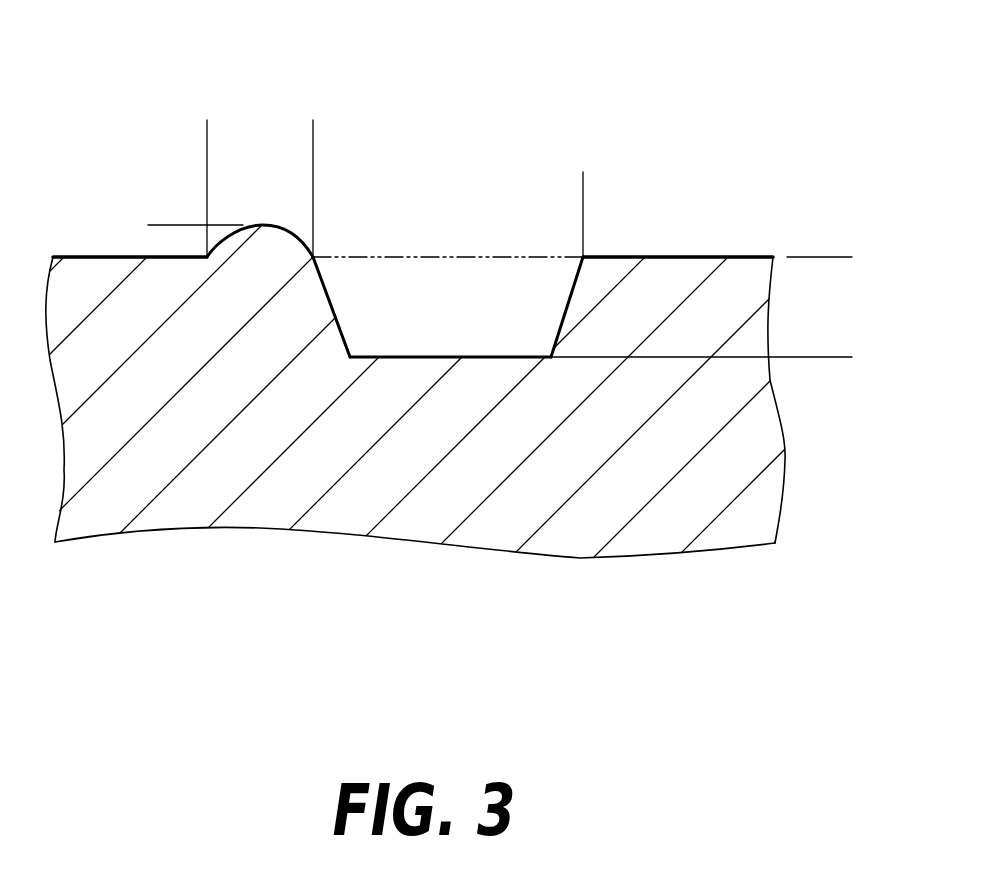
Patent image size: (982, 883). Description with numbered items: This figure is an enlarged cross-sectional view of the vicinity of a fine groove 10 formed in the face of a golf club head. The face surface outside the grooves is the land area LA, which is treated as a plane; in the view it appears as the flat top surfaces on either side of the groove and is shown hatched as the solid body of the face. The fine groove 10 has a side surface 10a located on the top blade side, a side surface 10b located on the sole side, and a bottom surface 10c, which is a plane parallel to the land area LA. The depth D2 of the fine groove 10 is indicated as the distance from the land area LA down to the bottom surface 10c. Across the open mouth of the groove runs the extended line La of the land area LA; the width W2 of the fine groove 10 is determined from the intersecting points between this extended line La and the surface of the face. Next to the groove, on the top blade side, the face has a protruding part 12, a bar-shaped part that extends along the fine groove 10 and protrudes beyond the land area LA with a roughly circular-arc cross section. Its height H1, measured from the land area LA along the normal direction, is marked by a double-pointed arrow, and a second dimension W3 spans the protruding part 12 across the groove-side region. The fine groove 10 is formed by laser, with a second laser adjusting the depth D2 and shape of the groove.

The fine groove 10 is at (521, 130).
The protruding part 12 is at (268, 238).
The side surface 10a is at (323, 284).
The side surface 10b is at (569, 297).
The bottom surface 10c is at (433, 357).
The extended line La is at (433, 256).
The land area LA is at (78, 257).
The width of protrusion W3 is at (313, 128).
The width W2 is at (313, 182).
The height H1 is at (157, 185).
The depth D2 is at (843, 257).